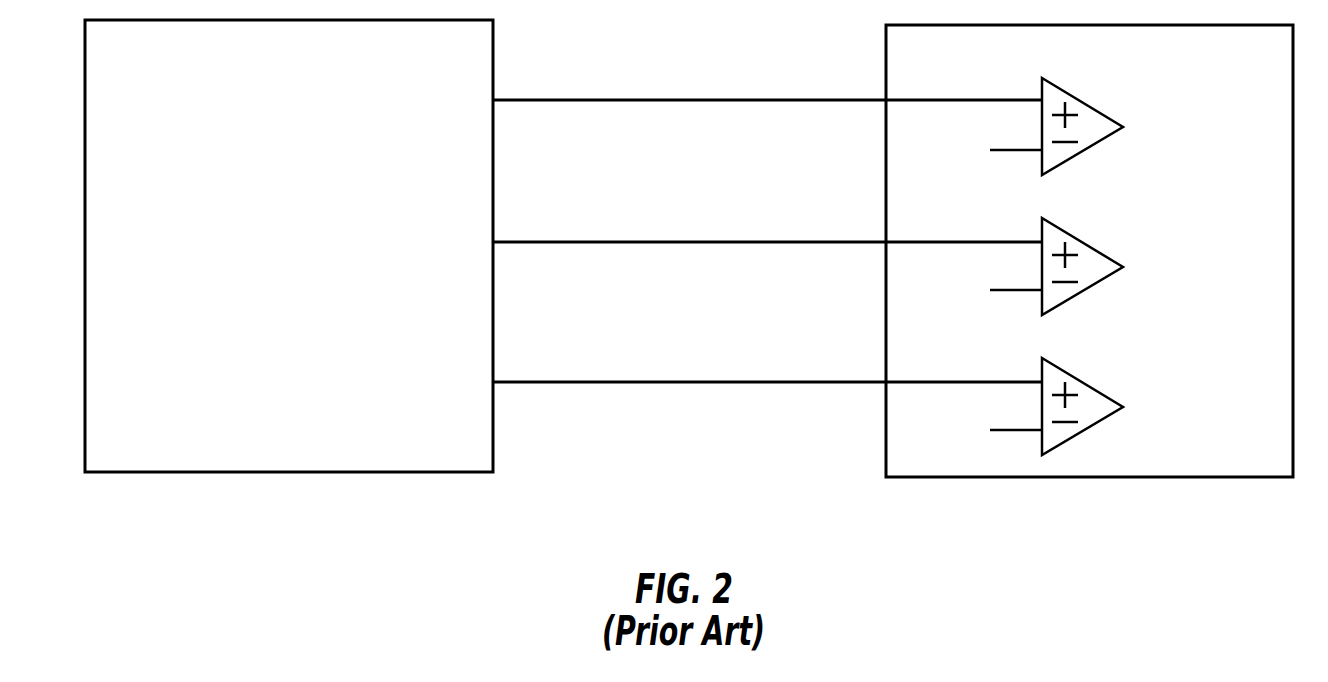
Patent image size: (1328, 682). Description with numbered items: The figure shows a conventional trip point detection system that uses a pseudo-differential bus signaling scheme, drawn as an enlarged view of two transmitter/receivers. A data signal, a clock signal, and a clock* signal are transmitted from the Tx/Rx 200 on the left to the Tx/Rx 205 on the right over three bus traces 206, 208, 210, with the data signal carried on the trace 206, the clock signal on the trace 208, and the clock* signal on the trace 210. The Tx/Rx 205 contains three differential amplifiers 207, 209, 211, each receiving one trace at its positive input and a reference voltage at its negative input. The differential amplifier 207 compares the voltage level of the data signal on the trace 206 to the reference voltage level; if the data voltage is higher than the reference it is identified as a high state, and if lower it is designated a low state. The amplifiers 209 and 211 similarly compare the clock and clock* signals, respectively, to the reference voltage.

The Tx/Rx 200 is at (470, 452).
The Tx/Rx 205 is at (1253, 458).
The bus trace 206 is at (767, 74).
The differential amplifier 207 is at (1044, 111).
The bus trace 208 is at (767, 215).
The differential amplifier 209 is at (1044, 251).
The bus trace 210 is at (767, 355).
The differential amplifier 211 is at (1044, 391).